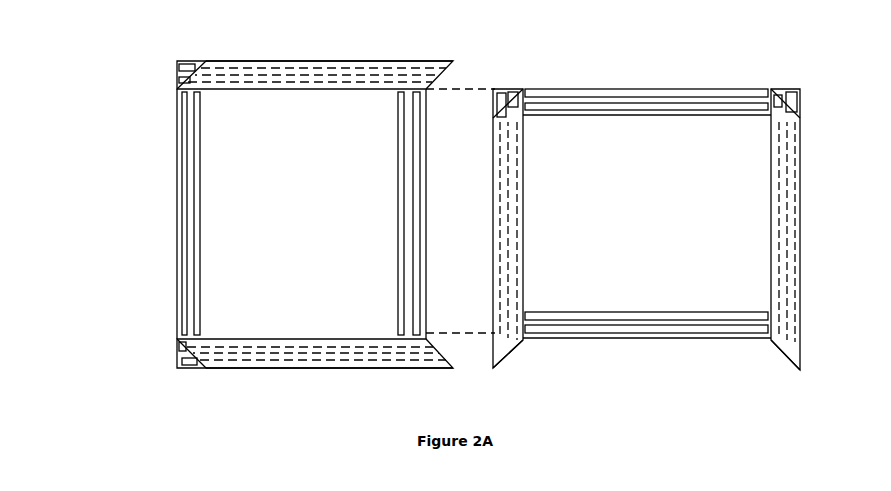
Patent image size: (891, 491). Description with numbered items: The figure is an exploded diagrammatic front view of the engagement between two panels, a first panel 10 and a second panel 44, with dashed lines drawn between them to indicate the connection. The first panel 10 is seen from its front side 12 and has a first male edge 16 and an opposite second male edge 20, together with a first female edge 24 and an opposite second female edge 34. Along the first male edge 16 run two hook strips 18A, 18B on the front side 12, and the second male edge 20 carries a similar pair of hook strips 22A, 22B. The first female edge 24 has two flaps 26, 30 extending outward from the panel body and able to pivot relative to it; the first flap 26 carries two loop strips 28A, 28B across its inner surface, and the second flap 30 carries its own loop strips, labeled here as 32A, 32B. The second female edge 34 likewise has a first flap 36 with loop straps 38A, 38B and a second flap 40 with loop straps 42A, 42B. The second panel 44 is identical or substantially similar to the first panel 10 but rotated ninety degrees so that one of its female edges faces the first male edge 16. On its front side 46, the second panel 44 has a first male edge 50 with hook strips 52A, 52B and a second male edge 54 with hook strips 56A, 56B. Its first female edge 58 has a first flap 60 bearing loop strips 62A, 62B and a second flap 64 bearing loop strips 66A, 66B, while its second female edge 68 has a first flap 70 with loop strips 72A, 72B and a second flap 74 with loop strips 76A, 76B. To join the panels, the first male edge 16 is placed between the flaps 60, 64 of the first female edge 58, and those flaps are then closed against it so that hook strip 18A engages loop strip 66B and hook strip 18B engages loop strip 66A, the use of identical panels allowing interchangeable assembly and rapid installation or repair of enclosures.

The panel 10 is at (257, 408).
The front side 12 is at (293, 215).
The first male edge 16 is at (427, 117).
The hook strip 18A is at (425, 305).
The hook strip 18B is at (405, 233).
The second male edge 20 is at (175, 180).
The hook strip 22A is at (186, 260).
The hook strip 22B is at (200, 232).
The first female edge 24 is at (218, 92).
The first flap 26 is at (182, 67).
The loop strip 28A is at (180, 66).
The loop strip 28B is at (178, 77).
The second flap 30 is at (220, 61).
The upper insulation layer 32A is at (343, 67).
The lower insulation layer 32B is at (322, 82).
The second female edge 34 is at (298, 340).
The first flap 36 is at (202, 368).
The loop strap 38A is at (187, 367).
The loop strap 38B is at (178, 353).
The second flap 40 is at (366, 368).
The loop strap 42A is at (316, 362).
The loop strap 42B is at (305, 340).
The second panel 44 is at (708, 403).
The front side 46 is at (643, 215).
The first male edge 50 is at (708, 90).
The hook strip 52A is at (628, 97).
The hook strip 52B is at (645, 108).
The second male edge 54 is at (614, 340).
The hook strip 56A is at (680, 330).
The hook strip 56B is at (645, 314).
The first female edge 58 is at (523, 147).
The first flap 60 is at (515, 90).
The loop strip 62A is at (499, 98).
The loop strip 62B is at (508, 92).
The second flap 64 is at (495, 368).
The loop strip 66A is at (503, 240).
The loop strip 66B is at (512, 202).
The second female edge 68 is at (777, 248).
The first flap 70 is at (800, 92).
The loop strip 72A is at (803, 108).
The loop strip 72B is at (788, 92).
The second flap 74 is at (792, 352).
The loop strip 76A is at (802, 205).
The loop strip 76B is at (775, 185).